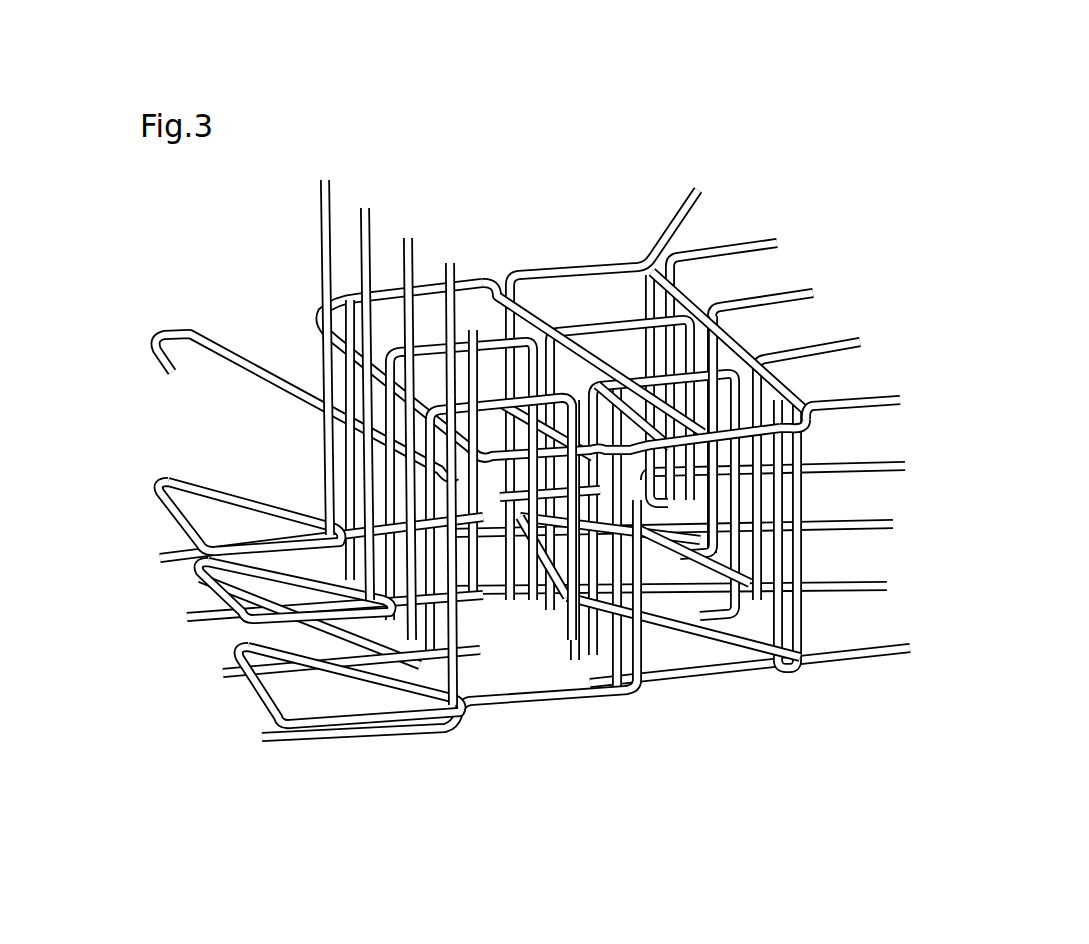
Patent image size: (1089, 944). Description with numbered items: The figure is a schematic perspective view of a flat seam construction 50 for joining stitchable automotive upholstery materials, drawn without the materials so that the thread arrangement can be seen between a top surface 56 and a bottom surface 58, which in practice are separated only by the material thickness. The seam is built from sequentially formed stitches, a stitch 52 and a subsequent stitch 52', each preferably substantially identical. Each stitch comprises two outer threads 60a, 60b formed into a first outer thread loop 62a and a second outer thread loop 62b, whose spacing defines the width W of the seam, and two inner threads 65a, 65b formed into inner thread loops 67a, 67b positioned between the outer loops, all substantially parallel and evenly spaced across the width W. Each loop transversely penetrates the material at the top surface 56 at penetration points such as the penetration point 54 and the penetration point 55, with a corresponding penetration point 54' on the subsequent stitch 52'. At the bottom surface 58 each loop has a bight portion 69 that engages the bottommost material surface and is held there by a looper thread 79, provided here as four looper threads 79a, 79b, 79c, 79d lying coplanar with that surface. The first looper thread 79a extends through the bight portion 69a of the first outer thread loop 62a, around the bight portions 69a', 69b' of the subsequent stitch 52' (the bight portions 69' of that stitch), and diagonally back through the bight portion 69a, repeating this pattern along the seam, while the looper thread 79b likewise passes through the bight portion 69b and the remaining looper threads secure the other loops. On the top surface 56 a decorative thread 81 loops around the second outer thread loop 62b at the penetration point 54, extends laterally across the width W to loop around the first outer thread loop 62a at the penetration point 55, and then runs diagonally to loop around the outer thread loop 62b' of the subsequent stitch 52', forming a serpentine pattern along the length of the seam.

The flat seam construction 50 is at (937, 137).
The stitch 52 is at (772, 484).
The subsequent stitch 52' is at (589, 384).
The penetration point 54 is at (604, 376).
The penetration point of subsequent stitch 54' is at (498, 320).
The penetration point 55 is at (808, 426).
The top surface 56 is at (318, 320).
The bottom surface 58 is at (452, 735).
The outer thread 60a is at (921, 387).
The outer thread 60b is at (808, 329).
The first outer thread loop 62a is at (813, 398).
The second outer thread loop 62b is at (748, 329).
The outer thread loop of subsequent stitch 62b' is at (592, 321).
The inner thread 65a is at (895, 447).
The inner thread 65b is at (822, 394).
The inner thread loop 67a is at (762, 342).
The inner thread loop 67b is at (697, 302).
The bight portion 69 is at (771, 632).
The bight portion of first outer thread loop 69a is at (803, 606).
The bight portion 69b is at (758, 603).
The bight portion of subsequent stitch 69' is at (625, 632).
The bight portion of subsequent stitch 69a' is at (651, 652).
The bight portion of subsequent stitch 69b' is at (596, 602).
The looper thread 79 is at (766, 573).
The first looper thread 79a is at (788, 657).
The looper thread 79b is at (881, 586).
The looper thread 79c is at (893, 523).
The looper thread 79d is at (900, 468).
The decorative thread 81 is at (168, 338).
The width W is at (145, 553).